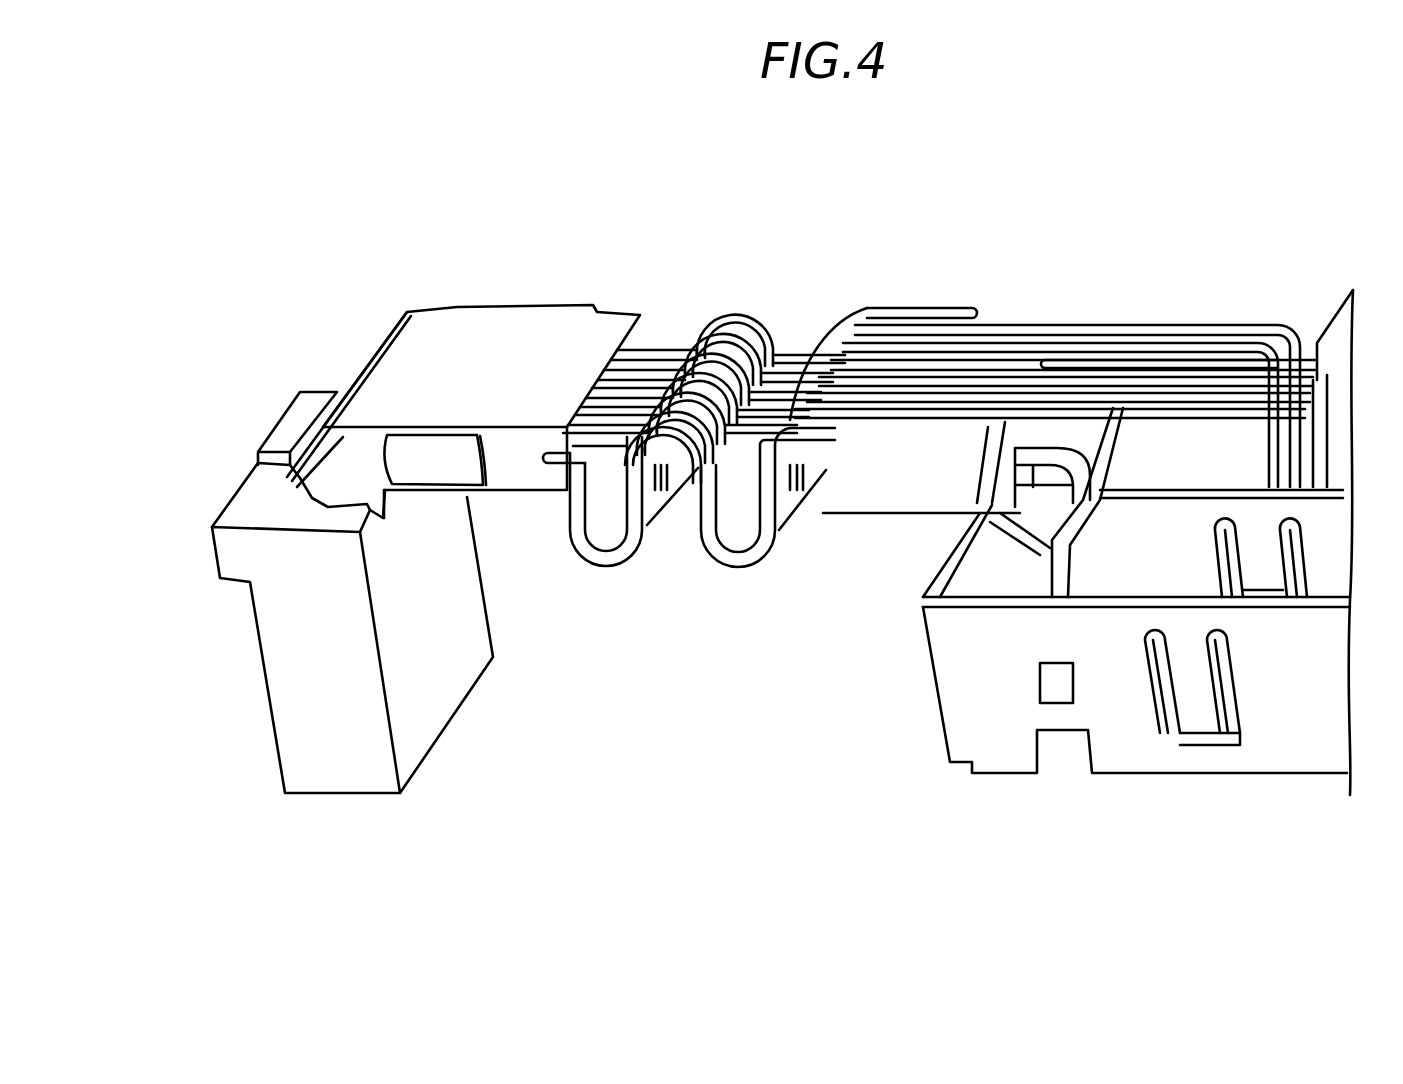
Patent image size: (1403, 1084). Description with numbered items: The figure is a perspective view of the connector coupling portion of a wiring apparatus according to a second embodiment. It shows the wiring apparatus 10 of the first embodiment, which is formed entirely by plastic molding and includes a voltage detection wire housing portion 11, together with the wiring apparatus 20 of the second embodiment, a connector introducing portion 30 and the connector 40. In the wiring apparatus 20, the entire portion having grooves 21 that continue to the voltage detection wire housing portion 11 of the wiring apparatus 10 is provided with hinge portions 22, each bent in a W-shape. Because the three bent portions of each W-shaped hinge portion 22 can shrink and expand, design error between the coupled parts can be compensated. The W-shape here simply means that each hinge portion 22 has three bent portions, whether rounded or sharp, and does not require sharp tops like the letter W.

The wiring apparatus 10 is at (1375, 208).
The voltage detection wire housing portion 11 is at (1072, 340).
The wiring apparatus 20 is at (1005, 207).
The grooves 21 is at (733, 320).
The hinge portions 22 is at (618, 568).
The connector introducing portion 30 is at (470, 328).
The connector 40 is at (240, 500).